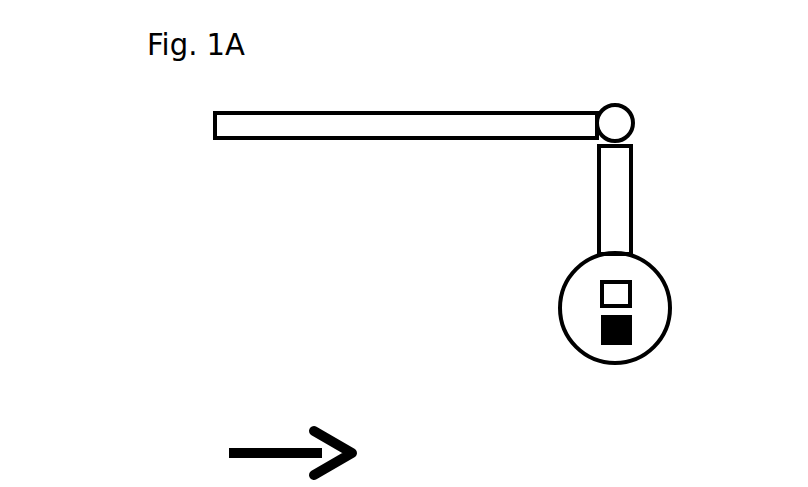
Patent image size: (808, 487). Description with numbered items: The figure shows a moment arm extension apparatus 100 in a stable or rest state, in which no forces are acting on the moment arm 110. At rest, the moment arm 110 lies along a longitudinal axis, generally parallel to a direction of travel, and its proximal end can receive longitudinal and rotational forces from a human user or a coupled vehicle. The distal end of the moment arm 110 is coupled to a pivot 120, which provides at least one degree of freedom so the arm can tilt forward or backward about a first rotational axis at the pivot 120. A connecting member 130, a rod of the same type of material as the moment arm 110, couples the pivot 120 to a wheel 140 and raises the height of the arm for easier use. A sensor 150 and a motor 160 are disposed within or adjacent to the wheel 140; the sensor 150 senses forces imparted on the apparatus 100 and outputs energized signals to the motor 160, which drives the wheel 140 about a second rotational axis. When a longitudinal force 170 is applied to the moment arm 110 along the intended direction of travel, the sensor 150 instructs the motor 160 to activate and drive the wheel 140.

The apparatus 100 is at (163, 175).
The moment arm 110 is at (388, 118).
The pivot 120 is at (632, 115).
The connecting member 130 is at (628, 215).
The wheel 140 is at (578, 269).
The sensor 150 is at (630, 293).
The motor 160 is at (632, 343).
The longitudinal force 170 is at (238, 447).